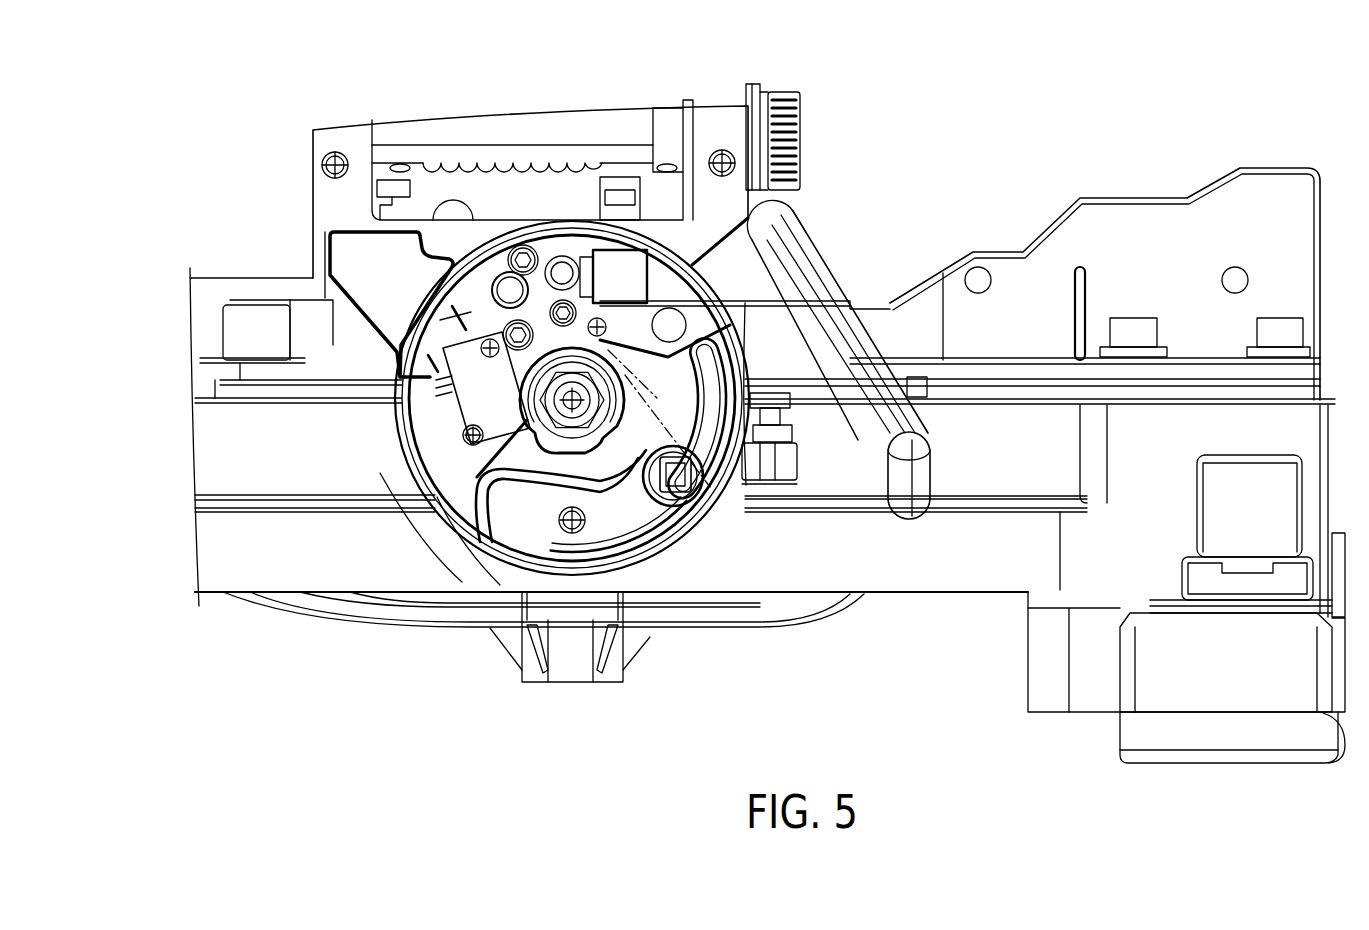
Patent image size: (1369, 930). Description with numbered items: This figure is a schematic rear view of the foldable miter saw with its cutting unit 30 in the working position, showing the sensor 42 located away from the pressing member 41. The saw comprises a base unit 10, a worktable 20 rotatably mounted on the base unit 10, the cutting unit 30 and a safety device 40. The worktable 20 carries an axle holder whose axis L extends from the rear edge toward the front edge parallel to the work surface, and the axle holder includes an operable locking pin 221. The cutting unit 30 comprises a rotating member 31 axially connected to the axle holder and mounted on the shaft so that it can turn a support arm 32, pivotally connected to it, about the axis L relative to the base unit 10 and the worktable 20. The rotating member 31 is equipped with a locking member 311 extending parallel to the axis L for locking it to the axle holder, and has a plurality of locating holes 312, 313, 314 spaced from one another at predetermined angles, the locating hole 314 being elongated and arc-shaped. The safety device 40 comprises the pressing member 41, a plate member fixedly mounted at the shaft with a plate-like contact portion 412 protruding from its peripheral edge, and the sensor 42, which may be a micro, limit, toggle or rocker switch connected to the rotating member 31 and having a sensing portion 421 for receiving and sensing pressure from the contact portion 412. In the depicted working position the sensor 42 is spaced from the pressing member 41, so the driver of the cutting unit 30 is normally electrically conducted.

The base unit 10 is at (1087, 702).
The worktable 20 is at (960, 466).
The cutting unit 30 is at (558, 128).
The rotating member 31 is at (792, 222).
The support arm 32 is at (620, 127).
The safety device 40 is at (522, 434).
The pressing member 41 is at (598, 453).
The sensor 42 is at (443, 390).
The operable locking pin 221 is at (493, 300).
The locking member 311 is at (712, 470).
The locating hole 312 is at (686, 320).
The locating hole 313 is at (562, 258).
The locating hole 314 is at (455, 322).
The contact portion 412 is at (568, 455).
The sensing portion 421 is at (468, 410).
The axis L is at (523, 450).